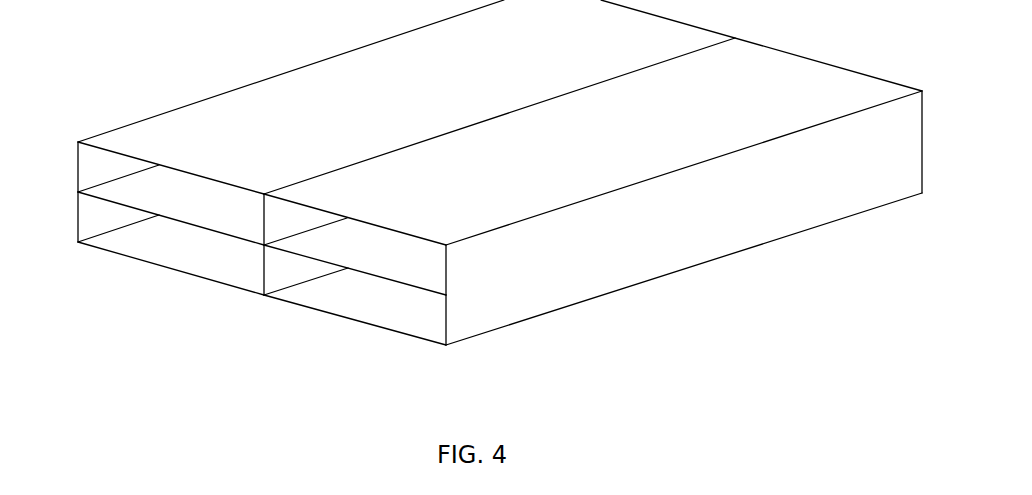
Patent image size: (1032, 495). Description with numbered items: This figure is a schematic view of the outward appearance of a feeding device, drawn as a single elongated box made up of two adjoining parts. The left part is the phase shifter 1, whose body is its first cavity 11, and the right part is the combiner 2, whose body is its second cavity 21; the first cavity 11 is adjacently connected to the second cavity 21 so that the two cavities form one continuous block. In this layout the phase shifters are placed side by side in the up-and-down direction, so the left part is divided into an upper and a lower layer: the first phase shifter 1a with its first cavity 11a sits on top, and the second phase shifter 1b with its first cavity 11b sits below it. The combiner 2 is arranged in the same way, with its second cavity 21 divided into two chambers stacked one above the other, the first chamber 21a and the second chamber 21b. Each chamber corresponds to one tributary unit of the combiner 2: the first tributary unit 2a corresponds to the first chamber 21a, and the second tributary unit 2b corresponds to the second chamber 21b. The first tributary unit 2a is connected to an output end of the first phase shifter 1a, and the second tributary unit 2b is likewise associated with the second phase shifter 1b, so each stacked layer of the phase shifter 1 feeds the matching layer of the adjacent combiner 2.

The phase shifter 1 is at (380, 182).
The first cavity 11 is at (380, 182).
The first phase shifter 1a is at (171, 253).
The first cavity of the first phase shifter 11a is at (237, 217).
The second phase shifter 1b is at (171, 274).
The first cavity of the second phase shifter 11b is at (171, 274).
The combiner 2 is at (576, 203).
The second cavity 21 is at (576, 203).
The first tributary unit 2a is at (355, 300).
The first chamber 21a is at (405, 262).
The second tributary unit 2b is at (338, 318).
The second chamber 21b is at (338, 318).